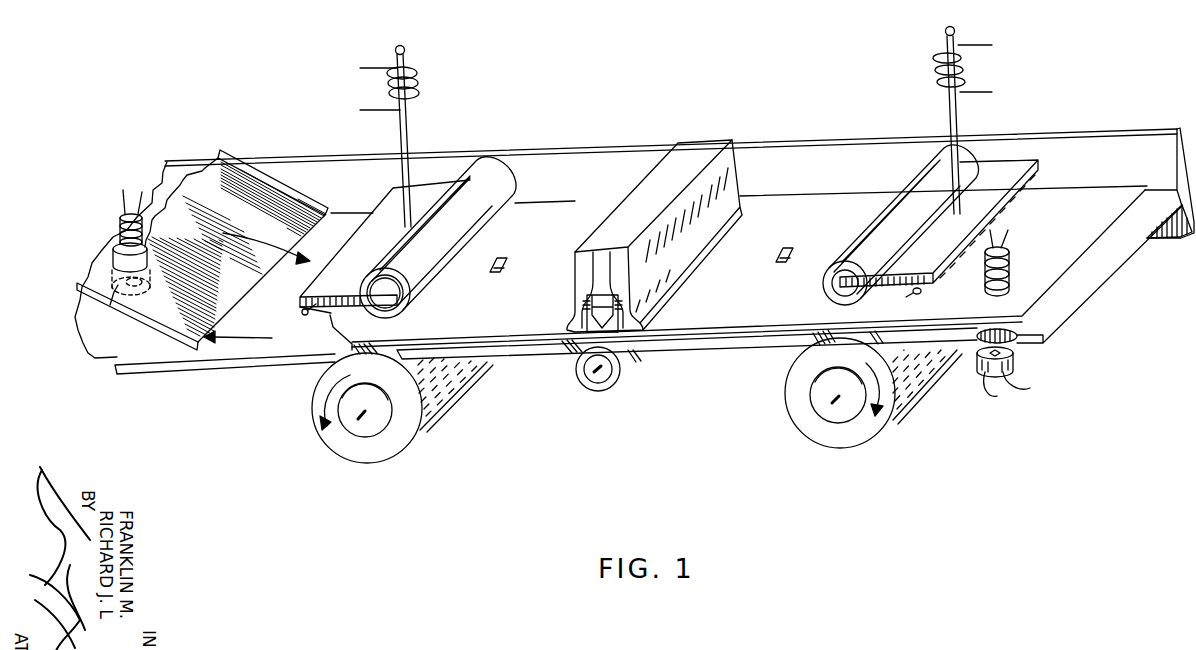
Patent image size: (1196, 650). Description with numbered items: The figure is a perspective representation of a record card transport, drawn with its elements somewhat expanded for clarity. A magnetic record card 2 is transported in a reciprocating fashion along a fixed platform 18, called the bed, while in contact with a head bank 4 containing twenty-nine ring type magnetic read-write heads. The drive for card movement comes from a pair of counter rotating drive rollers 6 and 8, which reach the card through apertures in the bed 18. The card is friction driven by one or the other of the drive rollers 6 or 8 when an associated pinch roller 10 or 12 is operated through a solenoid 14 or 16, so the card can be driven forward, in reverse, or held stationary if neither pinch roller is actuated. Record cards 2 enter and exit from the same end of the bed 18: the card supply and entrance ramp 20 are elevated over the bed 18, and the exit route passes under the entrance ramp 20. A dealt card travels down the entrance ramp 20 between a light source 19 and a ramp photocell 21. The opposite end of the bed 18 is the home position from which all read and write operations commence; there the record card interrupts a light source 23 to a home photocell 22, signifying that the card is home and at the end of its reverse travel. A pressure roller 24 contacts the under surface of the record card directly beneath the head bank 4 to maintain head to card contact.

The magnetic record card 2 is at (1080, 243).
The head bank 4 is at (700, 147).
The drive roller 6 is at (390, 462).
The drive roller 8 is at (850, 447).
The pinch roller 10 is at (497, 166).
The pinch roller 12 is at (967, 157).
The solenoid 14 is at (388, 88).
The solenoid 16 is at (962, 76).
The fixed platform (bed) 18 is at (1072, 310).
The light source 19 is at (120, 221).
The entrance ramp 20 is at (95, 288).
The ramp photocell 21 is at (141, 300).
The home photocell 22 is at (1013, 364).
The light source 23 is at (1010, 288).
The pressure roller 24 is at (615, 385).